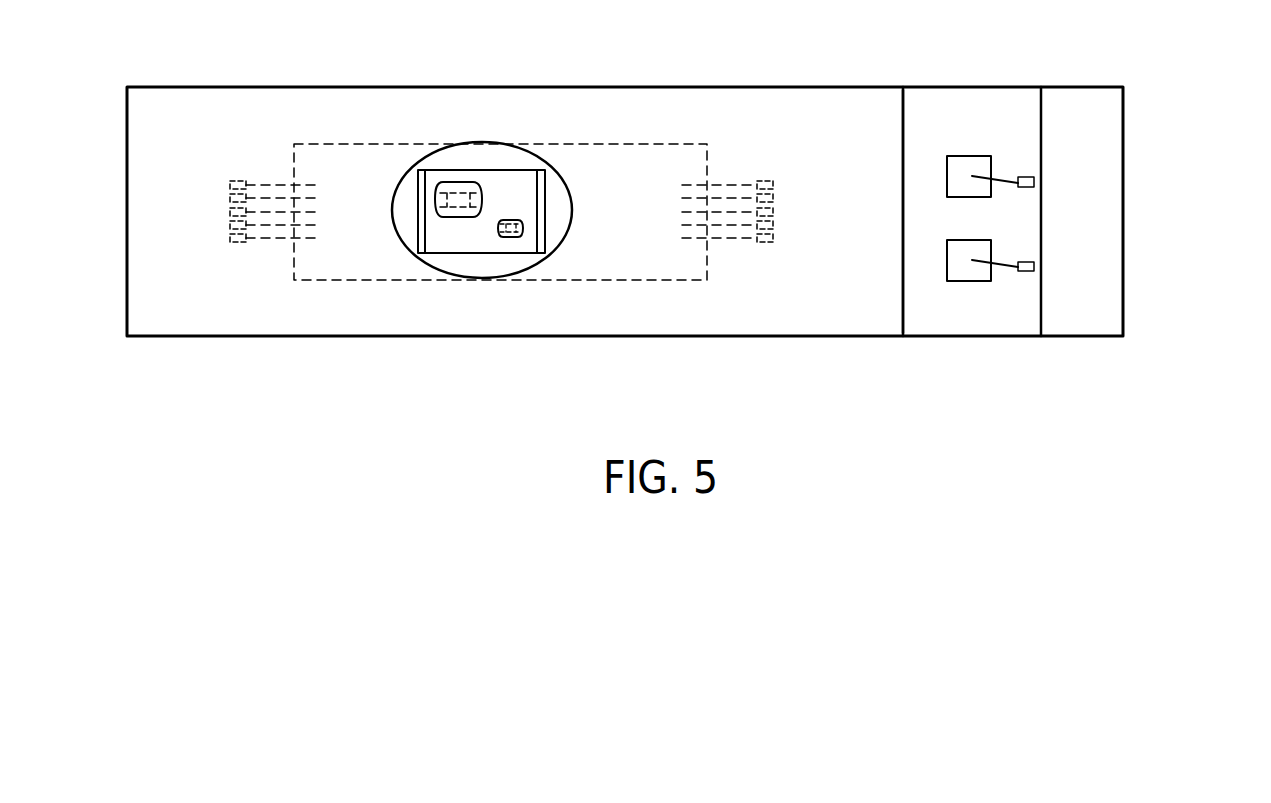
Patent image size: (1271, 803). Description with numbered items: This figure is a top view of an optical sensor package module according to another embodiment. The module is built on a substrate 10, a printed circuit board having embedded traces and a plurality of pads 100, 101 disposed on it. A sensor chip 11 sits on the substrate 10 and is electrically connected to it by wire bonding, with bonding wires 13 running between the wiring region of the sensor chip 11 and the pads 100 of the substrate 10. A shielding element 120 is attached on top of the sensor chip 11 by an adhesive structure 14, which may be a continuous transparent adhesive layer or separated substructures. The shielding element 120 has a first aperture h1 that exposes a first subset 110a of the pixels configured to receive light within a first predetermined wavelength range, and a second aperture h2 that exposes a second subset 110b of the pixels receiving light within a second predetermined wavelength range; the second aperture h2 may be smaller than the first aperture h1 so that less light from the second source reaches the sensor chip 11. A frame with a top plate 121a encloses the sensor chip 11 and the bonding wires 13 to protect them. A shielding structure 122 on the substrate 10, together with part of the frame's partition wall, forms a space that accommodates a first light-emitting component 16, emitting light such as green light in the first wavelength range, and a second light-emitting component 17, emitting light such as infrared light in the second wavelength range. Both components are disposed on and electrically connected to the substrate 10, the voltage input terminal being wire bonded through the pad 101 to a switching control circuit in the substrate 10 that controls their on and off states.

The substrate 10 is at (993, 315).
The sensor chip 11 is at (622, 273).
The bonding wires 13 is at (727, 185).
The adhesive structure 14 is at (423, 227).
The first light-emitting component 16 is at (958, 170).
The second light-emitting component 17 is at (959, 272).
The pads 100 is at (233, 172).
The pad 101 is at (1034, 181).
The first subset of the pixels 110a is at (448, 182).
The second subset of the pixels 110b is at (513, 245).
The shielding element 120 is at (467, 237).
The top plate 121a is at (810, 122).
The shielding structure 122 is at (1103, 118).
The first aperture h1 is at (465, 182).
The second aperture h2 is at (512, 220).